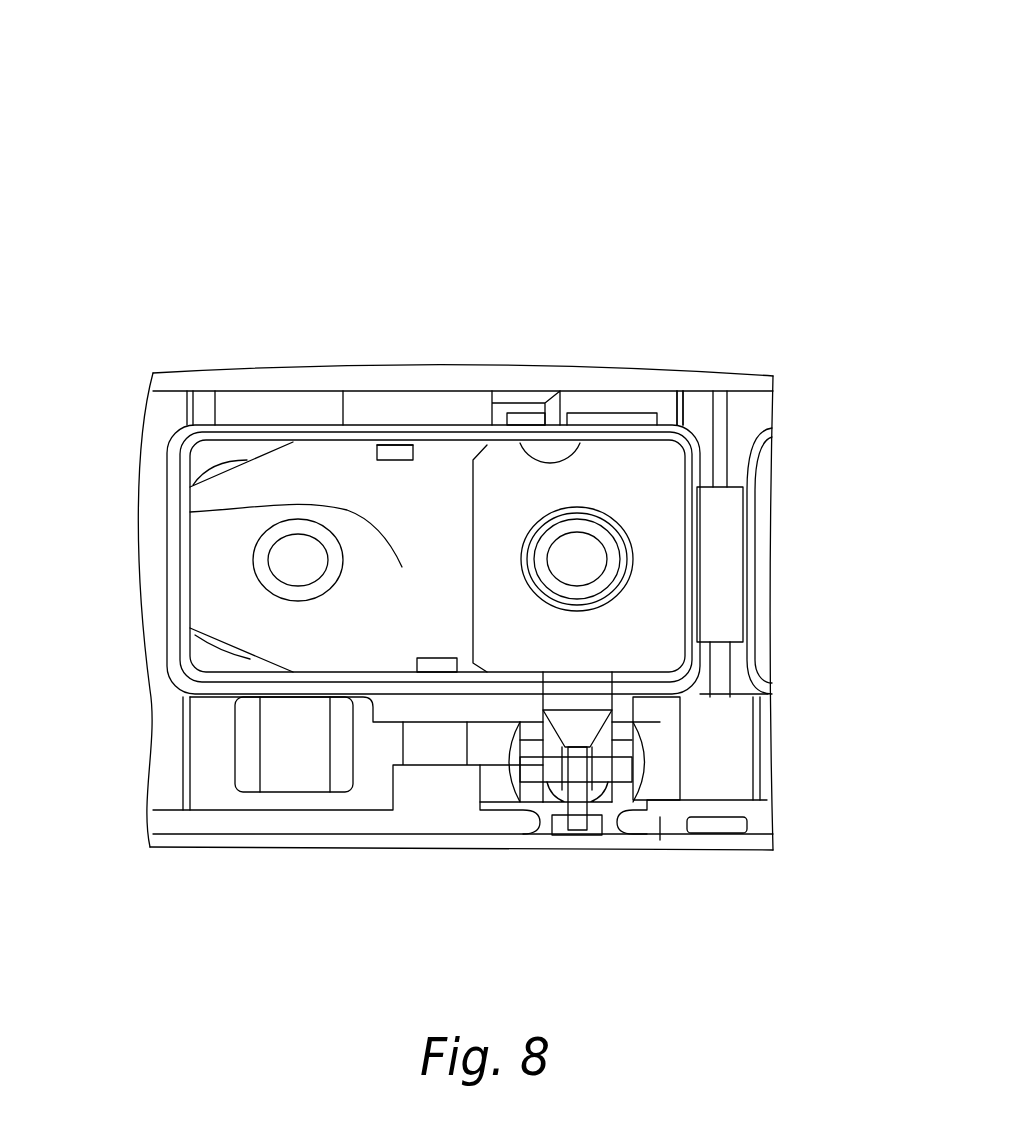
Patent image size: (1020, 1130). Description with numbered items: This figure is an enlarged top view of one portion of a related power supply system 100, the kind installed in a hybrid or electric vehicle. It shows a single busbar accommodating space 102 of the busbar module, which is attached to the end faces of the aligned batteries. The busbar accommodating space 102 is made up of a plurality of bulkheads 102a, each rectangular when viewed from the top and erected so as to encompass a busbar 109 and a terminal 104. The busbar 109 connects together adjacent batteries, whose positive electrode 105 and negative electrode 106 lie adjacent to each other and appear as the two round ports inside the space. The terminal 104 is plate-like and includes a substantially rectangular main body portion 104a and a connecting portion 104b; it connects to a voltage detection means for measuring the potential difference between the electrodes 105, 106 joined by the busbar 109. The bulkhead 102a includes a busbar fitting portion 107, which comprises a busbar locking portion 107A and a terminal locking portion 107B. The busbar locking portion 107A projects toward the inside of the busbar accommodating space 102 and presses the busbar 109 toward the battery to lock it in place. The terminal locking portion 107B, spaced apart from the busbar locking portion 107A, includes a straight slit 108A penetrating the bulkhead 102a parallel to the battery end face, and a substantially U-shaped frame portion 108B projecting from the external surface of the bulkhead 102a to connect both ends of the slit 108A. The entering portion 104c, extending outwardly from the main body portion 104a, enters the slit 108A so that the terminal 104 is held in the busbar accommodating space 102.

The power supply system 100 is at (552, 88).
The busbar accommodating space 102 is at (628, 425).
The bulkhead 102a is at (279, 410).
The terminal 104 is at (517, 127).
The main body portion 104a is at (580, 642).
The connecting portion 104b is at (577, 722).
The entering portion 104c is at (523, 420).
The positive electrode 105 is at (297, 560).
The negative electrode 106 is at (593, 562).
The busbar fitting portion 107 is at (365, 127).
The busbar locking portion 107A is at (397, 450).
The terminal locking portion 107B is at (537, 391).
The slit 108A is at (584, 443).
The frame portion 108B is at (525, 397).
The busbar 109 is at (190, 512).